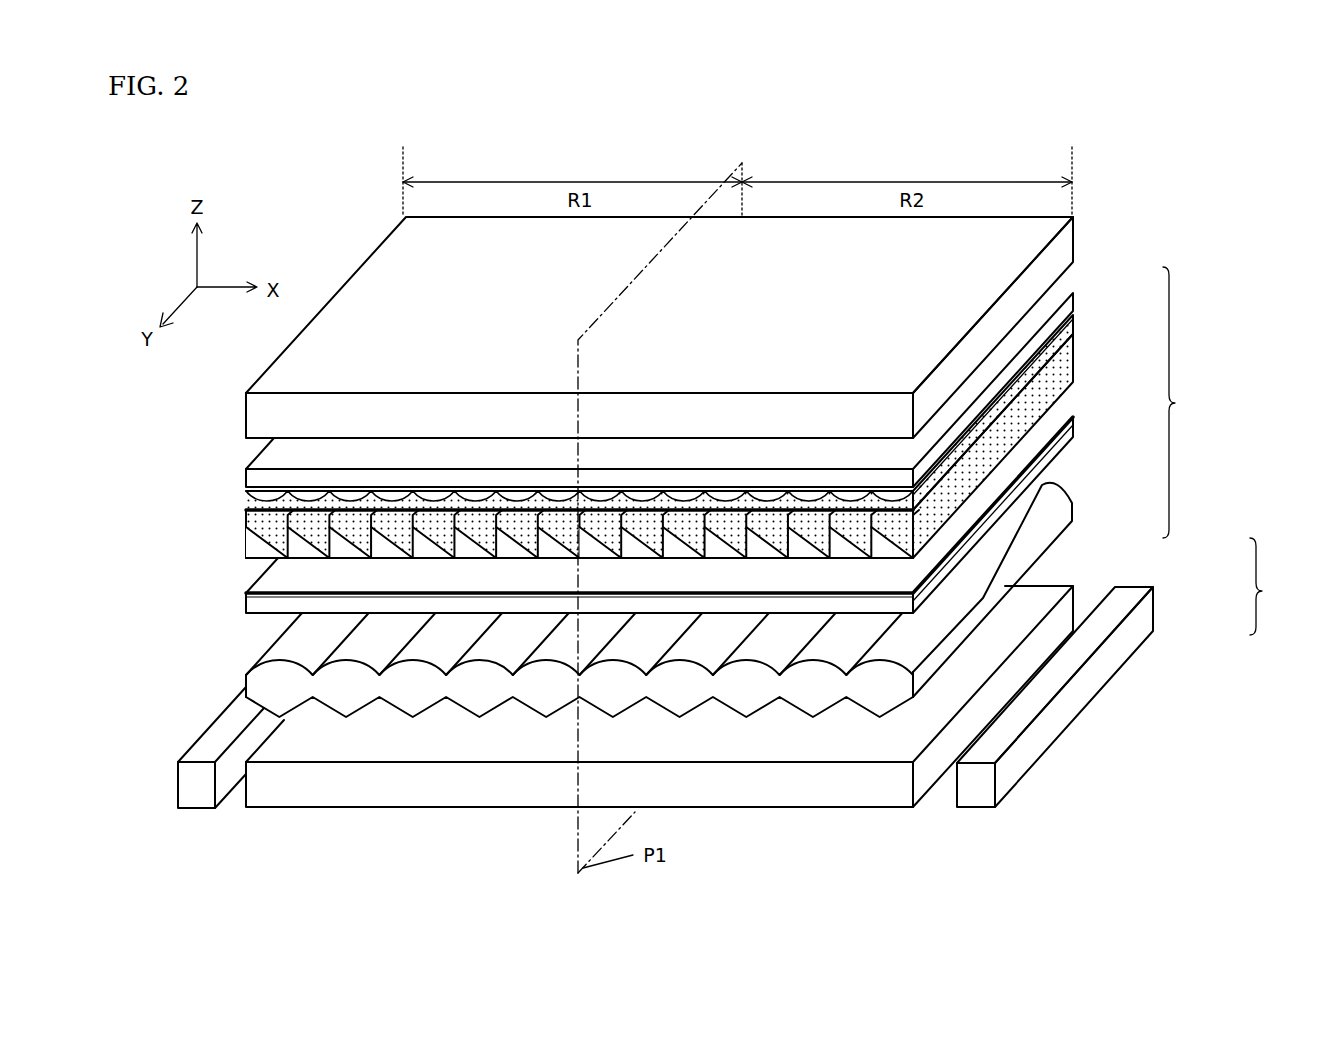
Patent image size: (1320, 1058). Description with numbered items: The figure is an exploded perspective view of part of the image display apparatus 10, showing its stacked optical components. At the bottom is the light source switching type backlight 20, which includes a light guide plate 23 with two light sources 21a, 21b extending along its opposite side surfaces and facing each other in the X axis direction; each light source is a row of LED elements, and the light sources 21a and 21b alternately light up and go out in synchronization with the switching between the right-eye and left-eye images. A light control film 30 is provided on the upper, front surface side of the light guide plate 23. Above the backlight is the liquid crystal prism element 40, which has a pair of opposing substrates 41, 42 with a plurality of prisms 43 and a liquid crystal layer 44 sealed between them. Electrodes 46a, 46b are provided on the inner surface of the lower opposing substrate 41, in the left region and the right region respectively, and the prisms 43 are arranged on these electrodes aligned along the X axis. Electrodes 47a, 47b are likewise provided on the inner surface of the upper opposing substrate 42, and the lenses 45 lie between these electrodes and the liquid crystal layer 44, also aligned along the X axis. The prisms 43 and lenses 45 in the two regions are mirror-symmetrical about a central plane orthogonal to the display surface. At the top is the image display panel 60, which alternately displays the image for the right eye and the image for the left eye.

The image display apparatus 10 is at (1230, 217).
The light source switching type backlight 20 is at (1270, 586).
The light source 21a is at (203, 745).
The light source 21b is at (1120, 645).
The light guide plate 23 is at (1060, 615).
The light control film 30 is at (997, 594).
The liquid crystal prism element 40 is at (1189, 402).
The opposing substrate 41 is at (993, 593).
The opposing substrate 42 is at (1073, 303).
The prisms 43 is at (905, 548).
The liquid crystal layer 44 is at (945, 472).
The lenses 45 is at (975, 462).
The electrode 46a is at (268, 583).
The electrode 46b is at (930, 582).
The electrode 47a is at (250, 497).
The electrode 47b is at (1073, 318).
The image display panel 60 is at (1063, 243).